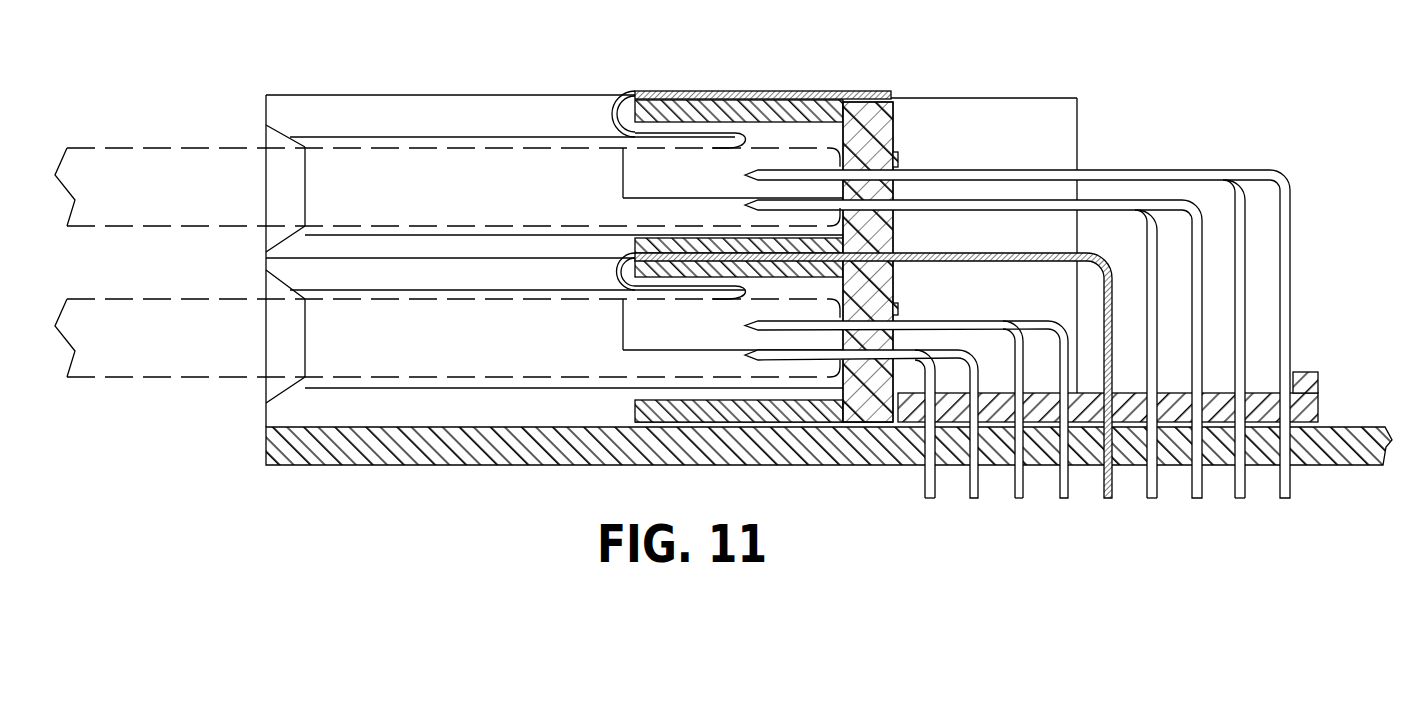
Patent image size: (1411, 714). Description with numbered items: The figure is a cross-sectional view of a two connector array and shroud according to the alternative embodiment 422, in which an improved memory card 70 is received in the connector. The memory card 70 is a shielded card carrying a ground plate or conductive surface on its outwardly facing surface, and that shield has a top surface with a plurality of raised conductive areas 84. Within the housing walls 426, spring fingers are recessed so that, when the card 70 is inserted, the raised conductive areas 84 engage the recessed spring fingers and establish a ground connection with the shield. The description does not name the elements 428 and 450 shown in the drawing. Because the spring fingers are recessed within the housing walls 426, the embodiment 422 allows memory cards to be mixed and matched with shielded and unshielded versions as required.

The memory card 70 is at (148, 195).
The raised conductive areas 84 is at (740, 143).
The embodiment 422 is at (1110, 95).
The housing walls 426 is at (823, 100).
The housing body 428 is at (830, 130).
The latch loop 450 is at (705, 80).